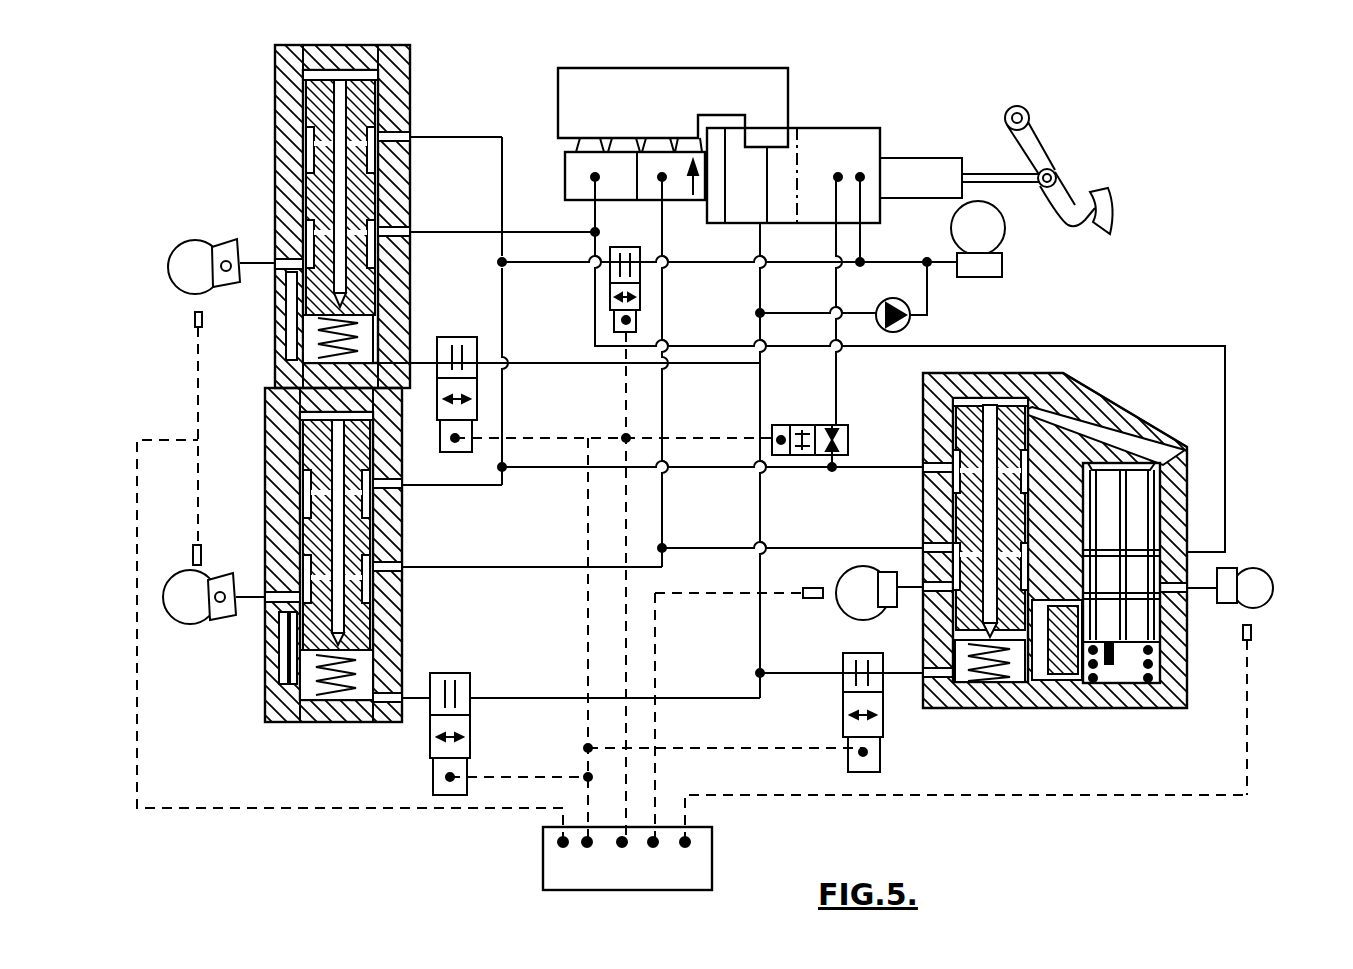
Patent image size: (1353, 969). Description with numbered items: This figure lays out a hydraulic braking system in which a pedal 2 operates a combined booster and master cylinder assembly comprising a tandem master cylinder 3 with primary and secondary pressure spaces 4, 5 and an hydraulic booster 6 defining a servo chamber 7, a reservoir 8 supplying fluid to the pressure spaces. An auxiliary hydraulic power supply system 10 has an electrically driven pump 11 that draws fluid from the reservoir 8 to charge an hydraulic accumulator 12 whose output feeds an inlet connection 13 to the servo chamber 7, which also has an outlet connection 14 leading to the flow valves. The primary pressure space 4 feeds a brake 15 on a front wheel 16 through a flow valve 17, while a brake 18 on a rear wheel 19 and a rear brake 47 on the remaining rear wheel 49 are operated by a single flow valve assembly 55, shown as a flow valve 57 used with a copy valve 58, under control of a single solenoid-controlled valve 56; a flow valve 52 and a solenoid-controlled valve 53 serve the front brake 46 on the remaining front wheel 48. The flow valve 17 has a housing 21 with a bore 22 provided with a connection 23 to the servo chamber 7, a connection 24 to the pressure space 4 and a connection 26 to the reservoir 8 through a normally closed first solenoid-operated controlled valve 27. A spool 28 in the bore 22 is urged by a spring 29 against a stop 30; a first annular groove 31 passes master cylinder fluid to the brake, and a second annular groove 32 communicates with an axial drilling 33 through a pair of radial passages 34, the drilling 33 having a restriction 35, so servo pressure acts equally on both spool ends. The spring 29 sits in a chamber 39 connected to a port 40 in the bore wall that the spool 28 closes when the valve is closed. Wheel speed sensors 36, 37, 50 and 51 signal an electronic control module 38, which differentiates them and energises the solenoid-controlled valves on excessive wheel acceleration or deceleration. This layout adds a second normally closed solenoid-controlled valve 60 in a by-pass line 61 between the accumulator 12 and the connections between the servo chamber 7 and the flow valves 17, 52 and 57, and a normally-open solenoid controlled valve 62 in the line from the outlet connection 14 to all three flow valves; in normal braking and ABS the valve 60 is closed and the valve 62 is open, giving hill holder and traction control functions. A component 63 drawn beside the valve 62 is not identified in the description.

The pedal 2 is at (1078, 210).
The tandem master cylinder 3 is at (700, 188).
The primary pressure space 4 is at (688, 192).
The secondary pressure space 5 is at (580, 178).
The hydraulic booster 6 is at (850, 150).
The servo chamber 7 is at (820, 188).
The reservoir 8 is at (560, 97).
The auxiliary hydraulic power supply system 10 is at (903, 265).
The electrically driven pump 11 is at (908, 326).
The hydraulic accumulator 12 is at (1000, 262).
The inlet connection 13 is at (862, 172).
The outlet connection 14 is at (838, 170).
The brake 15 is at (222, 582).
The front wheel 16 is at (182, 625).
The flow valve 17 is at (285, 404).
The brake 18 is at (884, 574).
The rear wheel 19 is at (858, 600).
The housing 21 is at (412, 368).
The bore 22 is at (302, 442).
The connection 23 is at (395, 483).
The connection 24 is at (405, 560).
The connection 26 is at (385, 668).
The first solenoid-operated controlled valve 27 is at (468, 678).
The spool 28 is at (320, 436).
The spring 29 is at (342, 700).
The stop 30 is at (318, 400).
The first annular groove 31 is at (395, 582).
The second annular groove 32 is at (303, 498).
The axial drilling 33 is at (338, 530).
The radial passages 34 is at (305, 493).
The restriction 35 is at (380, 632).
The wheel speed sensor 36 is at (193, 550).
The wheel speed sensor 37 is at (812, 600).
The electronic control module 38 is at (562, 880).
The chamber 39 is at (302, 705).
The port 40 is at (285, 615).
The front brake 46 is at (224, 258).
The rear brake 47 is at (1230, 575).
The front wheel 48 is at (190, 248).
The rear wheel 49 is at (1258, 582).
The wheel speed sensor 50 is at (195, 325).
The wheel speed sensor 51 is at (1253, 640).
The flow valve 52 is at (268, 94).
The solenoid-controlled valve 53 is at (455, 345).
The flow valve assembly 55 is at (1112, 415).
The solenoid-controlled valve 56 is at (886, 703).
The flow valve 57 is at (1017, 435).
The copy valve 58 is at (1130, 510).
The second normally closed solenoid-controlled valve 60 is at (608, 268).
The by-pass line 61 is at (735, 270).
The normally-open solenoid controlled valve 62 is at (797, 423).
The check valve 63 is at (838, 423).